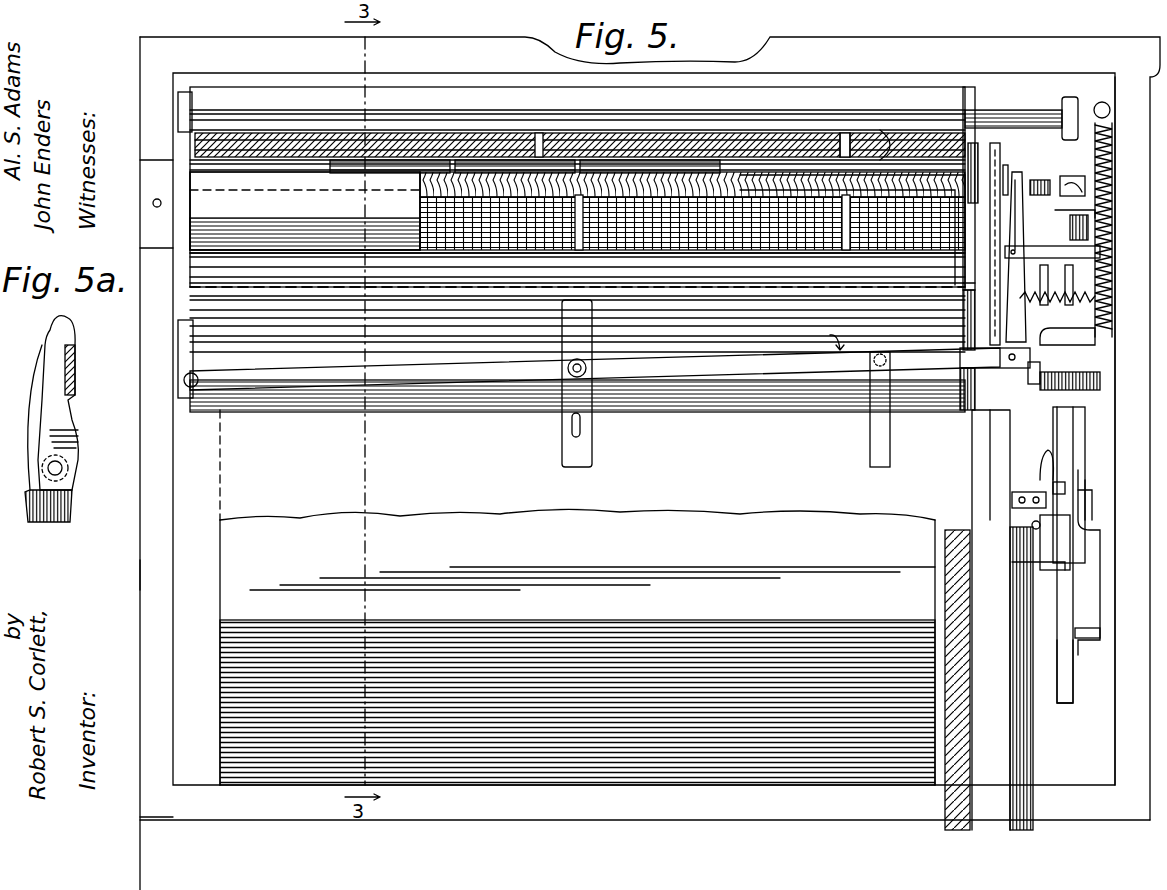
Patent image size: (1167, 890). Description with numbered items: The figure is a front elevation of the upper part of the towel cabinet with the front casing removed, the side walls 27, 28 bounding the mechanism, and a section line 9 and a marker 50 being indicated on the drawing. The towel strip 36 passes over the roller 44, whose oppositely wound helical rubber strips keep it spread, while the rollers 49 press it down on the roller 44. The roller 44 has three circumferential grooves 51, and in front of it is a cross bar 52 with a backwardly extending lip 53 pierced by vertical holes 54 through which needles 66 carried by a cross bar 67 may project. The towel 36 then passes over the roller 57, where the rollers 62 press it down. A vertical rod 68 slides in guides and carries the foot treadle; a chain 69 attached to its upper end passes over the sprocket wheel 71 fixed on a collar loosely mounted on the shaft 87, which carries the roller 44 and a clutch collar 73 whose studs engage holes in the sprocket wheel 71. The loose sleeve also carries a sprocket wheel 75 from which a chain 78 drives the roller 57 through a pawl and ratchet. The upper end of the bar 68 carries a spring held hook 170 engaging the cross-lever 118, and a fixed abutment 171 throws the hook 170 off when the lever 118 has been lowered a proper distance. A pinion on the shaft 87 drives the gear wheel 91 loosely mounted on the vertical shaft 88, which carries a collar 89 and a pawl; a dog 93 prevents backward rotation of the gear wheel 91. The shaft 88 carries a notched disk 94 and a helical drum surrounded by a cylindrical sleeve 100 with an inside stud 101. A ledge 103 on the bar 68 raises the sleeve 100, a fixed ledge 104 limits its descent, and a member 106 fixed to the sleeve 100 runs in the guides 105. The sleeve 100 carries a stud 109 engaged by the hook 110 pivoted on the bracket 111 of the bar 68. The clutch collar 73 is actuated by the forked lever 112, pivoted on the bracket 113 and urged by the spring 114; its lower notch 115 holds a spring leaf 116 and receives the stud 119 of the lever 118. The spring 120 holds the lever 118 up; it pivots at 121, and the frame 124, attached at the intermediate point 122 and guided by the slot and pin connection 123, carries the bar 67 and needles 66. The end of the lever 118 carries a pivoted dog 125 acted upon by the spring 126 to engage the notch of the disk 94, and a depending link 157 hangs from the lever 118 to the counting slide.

In FIG. 5, the needles 66 is at (912, 150).
In FIG. 5, the vertical holes 54 is at (472, 160).
In FIG. 5, the backwardly extending lip 53 is at (540, 160).
In FIG. 5, the bar 50 is at (690, 140).
In FIG. 5, the roller 44 is at (812, 133).
In FIG. 5, the rollers 49 is at (905, 150).
In FIG. 5, the cross bar 52 is at (305, 211).
In FIG. 5, the cross bar 67 is at (852, 231).
In FIG. 5, the rollers 62 is at (650, 253).
In FIG. 5, the frame 124 is at (577, 285).
In FIG. 5, the chain 78 is at (965, 296).
In FIG. 5, the circumferential grooves 51 is at (845, 250).
In FIG. 5, the roller 57 is at (708, 412).
In FIG. 5, the cross-lever 118 is at (589, 359).
In FIG. 5A, the cross-lever 118 is at (76, 372).
In FIG. 5, the intermediate point 122 is at (585, 360).
In FIG. 5, the slot and pin connection 123 is at (568, 425).
In FIG. 5, the depending link 157 is at (878, 448).
In FIG. 5, the section line 9 is at (828, 345).
In FIG. 5, the towel strip 36 is at (530, 640).
In FIG. 5, the side wall 28 is at (140, 572).
In FIG. 5, the sprocket wheel 75 is at (975, 143).
In FIG. 5, the sprocket wheel 71 is at (998, 143).
In FIG. 5, the clutch collar 73 is at (1008, 170).
In FIG. 5, the shaft 87 is at (1048, 180).
In FIG. 5, the dog 93 is at (1078, 178).
In FIG. 5, the gear wheel 91 is at (1112, 170).
In FIG. 5, the bracket 113 is at (1032, 232).
In FIG. 5, the lever 112 is at (1020, 225).
In FIG. 5, the spring 120 is at (1090, 224).
In FIG. 5, the collar 89 is at (1100, 250).
In FIG. 5, the spring 114 is at (1095, 296).
In FIG. 5, the pivoted dog 125 is at (1097, 336).
In FIG. 5, the stud 119 is at (960, 358).
In FIG. 5, the disk 94 is at (1100, 380).
In FIG. 5, the spring 126 is at (1034, 384).
In FIG. 5, the chain 69 is at (990, 312).
In FIG. 5, the spring leaf 116 is at (968, 410).
In FIG. 5, the notch 115 is at (1008, 408).
In FIG. 5, the cylindrical sleeve 100 is at (1085, 420).
In FIG. 5, the hook 110 is at (1046, 455).
In FIG. 5, the stud 109 is at (1068, 488).
In FIG. 5, the stud 101 is at (1092, 495).
In FIG. 5, the bracket 111 is at (1012, 505).
In FIG. 5, the member 106 is at (1070, 530).
In FIG. 5, the ledge 103 is at (1020, 564).
In FIG. 5, the guides 105 is at (1090, 600).
In FIG. 5, the fixed ledge 104 is at (1085, 640).
In FIG. 5, the vertical shaft 88 is at (1062, 703).
In FIG. 5, the vertical rod 68 is at (989, 678).
In FIG. 5A, the vertical rod 68 is at (62, 508).
In FIG. 5, the side wall 27 is at (1124, 431).
In FIG. 5A, the spring held hook 170 is at (68, 328).
In FIG. 5A, the pivot 121 is at (176, 385).
In FIG. 5A, the fixed abutment 171 is at (70, 470).